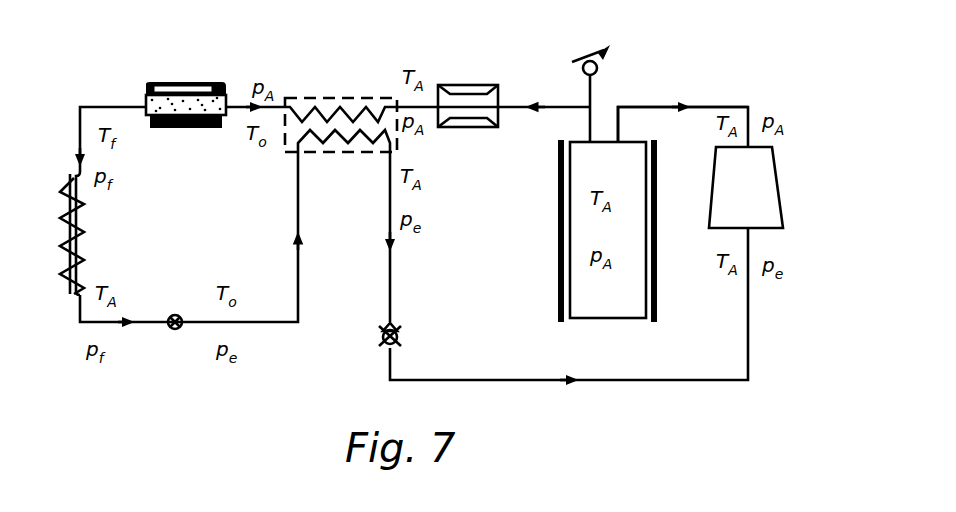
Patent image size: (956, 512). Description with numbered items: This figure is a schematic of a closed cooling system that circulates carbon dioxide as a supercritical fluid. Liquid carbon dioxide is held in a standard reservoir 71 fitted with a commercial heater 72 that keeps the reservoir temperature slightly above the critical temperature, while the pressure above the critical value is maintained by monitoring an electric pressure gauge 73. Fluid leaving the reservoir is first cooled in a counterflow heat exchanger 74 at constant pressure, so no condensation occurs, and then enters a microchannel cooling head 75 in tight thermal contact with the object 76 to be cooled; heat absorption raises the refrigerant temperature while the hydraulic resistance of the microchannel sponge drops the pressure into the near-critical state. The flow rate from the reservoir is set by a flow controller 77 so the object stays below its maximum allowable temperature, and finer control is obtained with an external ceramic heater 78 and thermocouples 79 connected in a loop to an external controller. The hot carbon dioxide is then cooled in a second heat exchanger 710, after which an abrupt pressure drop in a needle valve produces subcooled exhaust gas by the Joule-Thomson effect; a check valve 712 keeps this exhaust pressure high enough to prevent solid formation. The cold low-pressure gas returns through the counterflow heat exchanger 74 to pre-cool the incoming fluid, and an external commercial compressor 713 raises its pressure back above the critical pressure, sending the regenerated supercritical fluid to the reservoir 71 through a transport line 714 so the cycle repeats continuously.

The standard reservoir 71 is at (600, 322).
The commercial heater 72 is at (559, 253).
The electric pressure gauge 73 is at (573, 58).
The counterflow heat exchanger 74 is at (349, 98).
The microchannel cooling head 75 is at (147, 97).
The object to be cooled 76 is at (184, 129).
The flow controller 77 is at (458, 86).
The external ceramic heater 78 is at (188, 83).
The thermocouples 79 is at (224, 83).
The second heat exchanger 710 is at (57, 285).
The check valve 712 is at (409, 321).
The external commercial compressor 713 is at (794, 185).
The transport line 714 is at (636, 106).